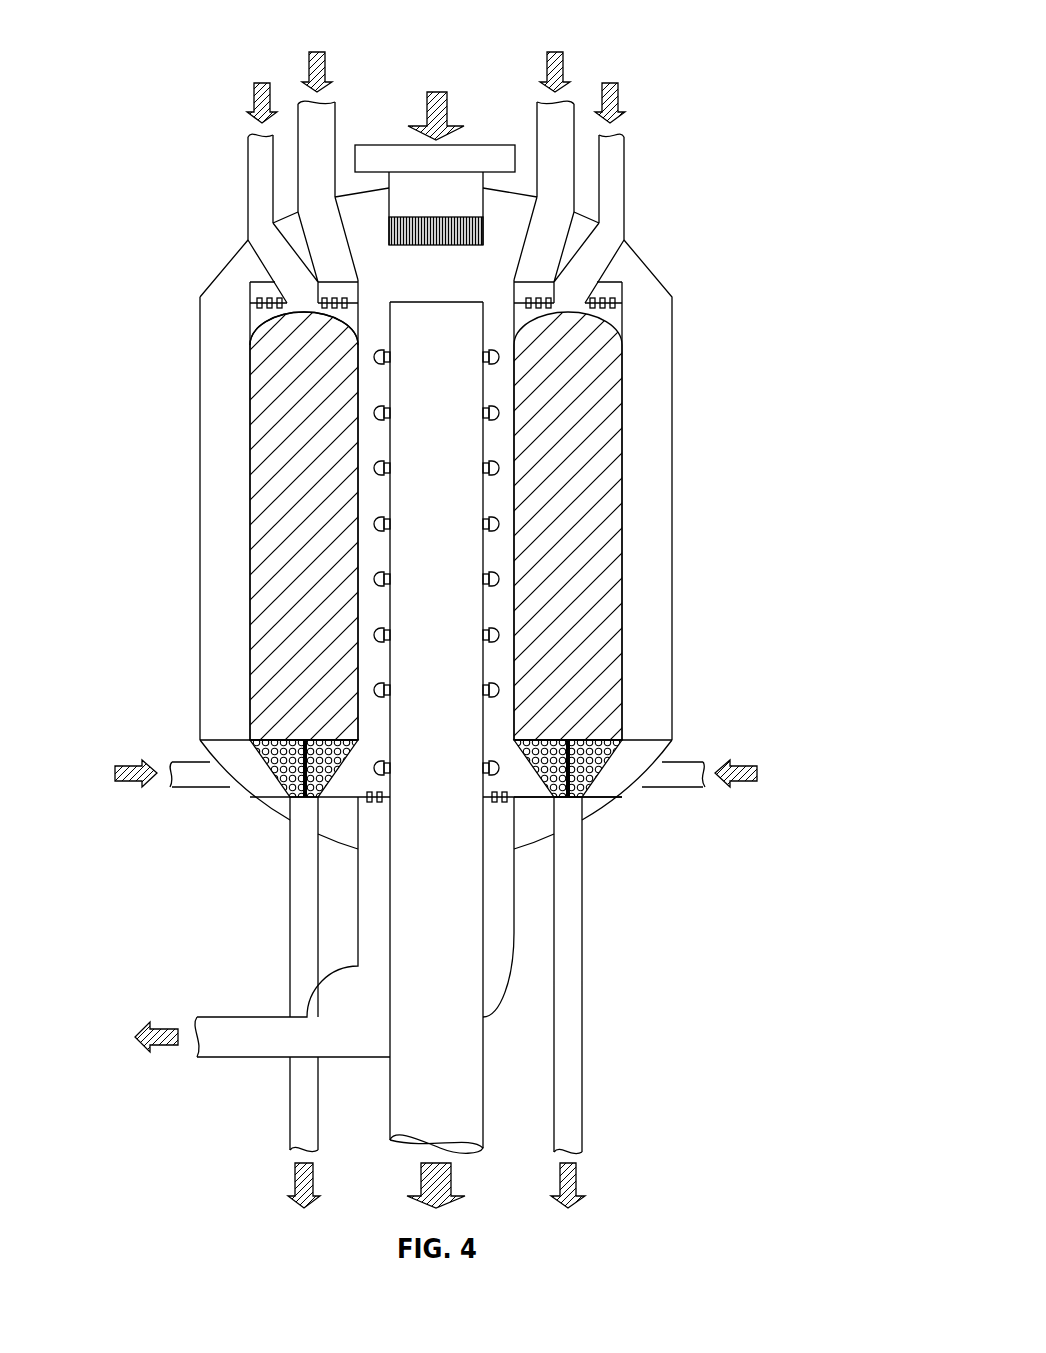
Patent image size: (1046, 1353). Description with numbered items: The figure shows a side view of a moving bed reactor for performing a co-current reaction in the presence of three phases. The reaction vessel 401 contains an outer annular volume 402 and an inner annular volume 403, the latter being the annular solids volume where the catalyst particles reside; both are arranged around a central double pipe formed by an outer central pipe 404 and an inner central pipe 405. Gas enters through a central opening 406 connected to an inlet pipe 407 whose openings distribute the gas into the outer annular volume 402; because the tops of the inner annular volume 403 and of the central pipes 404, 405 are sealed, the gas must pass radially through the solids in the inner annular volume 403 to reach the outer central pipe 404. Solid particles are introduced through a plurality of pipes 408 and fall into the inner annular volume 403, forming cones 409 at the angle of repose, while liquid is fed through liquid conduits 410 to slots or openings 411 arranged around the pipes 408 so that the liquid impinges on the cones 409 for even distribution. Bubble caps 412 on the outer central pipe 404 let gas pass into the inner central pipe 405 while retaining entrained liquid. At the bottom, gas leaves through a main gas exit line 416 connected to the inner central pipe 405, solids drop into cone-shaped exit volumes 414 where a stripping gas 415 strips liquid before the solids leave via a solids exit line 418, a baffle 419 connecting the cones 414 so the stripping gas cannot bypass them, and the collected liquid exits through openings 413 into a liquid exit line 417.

The reaction vessel 401 is at (201, 360).
The outer annular volume 402 is at (223, 403).
The inner annular volume 403 is at (262, 445).
The outer central pipe 404 is at (368, 503).
The inner central pipe 405 is at (465, 560).
The central opening 406 is at (480, 143).
The inlet pipe 407 is at (427, 213).
The pipes 408 is at (248, 178).
The cones 409 is at (283, 340).
The liquid conduits 410 is at (558, 120).
The slots or openings 411 is at (613, 288).
The bubble caps 412 is at (503, 524).
The openings 413 is at (498, 800).
The cone-shaped exit volumes 414 is at (607, 762).
The stripping gas 415 is at (190, 777).
The main gas exit line 416 is at (467, 1047).
The liquid exit line 417 is at (235, 1032).
The solids exit line 418 is at (290, 915).
The baffle 419 is at (517, 793).